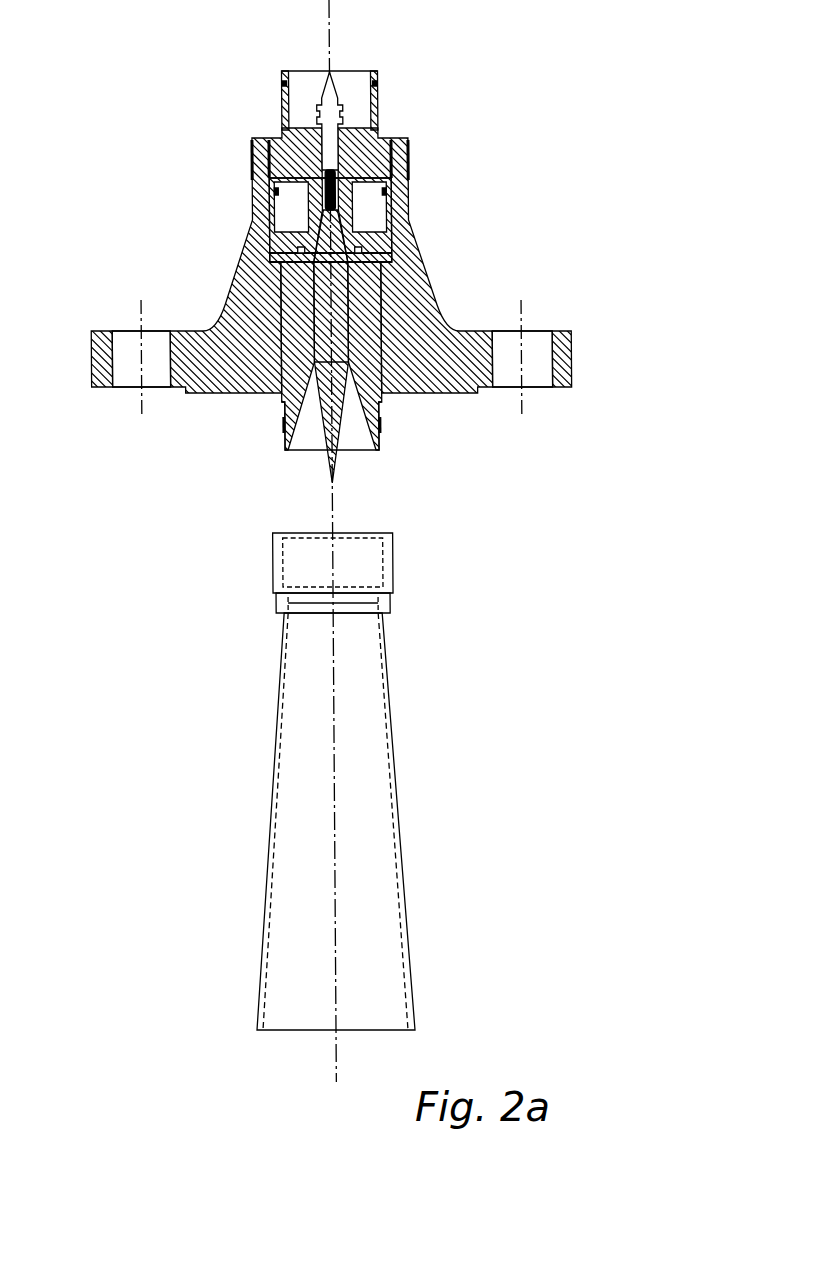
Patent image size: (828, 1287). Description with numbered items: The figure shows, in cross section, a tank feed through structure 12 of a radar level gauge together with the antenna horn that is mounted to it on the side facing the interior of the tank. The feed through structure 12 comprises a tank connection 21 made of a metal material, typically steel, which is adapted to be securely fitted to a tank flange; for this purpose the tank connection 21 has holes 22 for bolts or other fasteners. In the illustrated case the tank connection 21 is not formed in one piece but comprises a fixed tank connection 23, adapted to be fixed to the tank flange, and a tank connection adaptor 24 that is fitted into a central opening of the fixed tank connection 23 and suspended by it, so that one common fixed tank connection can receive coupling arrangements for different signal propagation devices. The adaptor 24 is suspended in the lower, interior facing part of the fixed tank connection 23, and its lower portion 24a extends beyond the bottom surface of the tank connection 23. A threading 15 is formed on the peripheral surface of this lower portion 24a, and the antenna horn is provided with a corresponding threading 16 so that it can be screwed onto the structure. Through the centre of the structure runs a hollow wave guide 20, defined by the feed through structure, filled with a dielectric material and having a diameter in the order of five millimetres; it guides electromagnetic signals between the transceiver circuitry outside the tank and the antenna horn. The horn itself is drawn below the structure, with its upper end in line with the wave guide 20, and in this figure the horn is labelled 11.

The horn antenna 11 is at (395, 737).
The tank feed through structure 12 is at (414, 277).
The threading 15 is at (383, 430).
The threading 16 is at (382, 565).
The hollow wave guide 20 is at (337, 150).
The tank connection 21 is at (232, 266).
The holes 22 is at (125, 342).
The fixed tank connection 23 is at (422, 318).
The tank connection adaptor 24 is at (363, 292).
The lower portion of the adaptor 24a is at (285, 423).